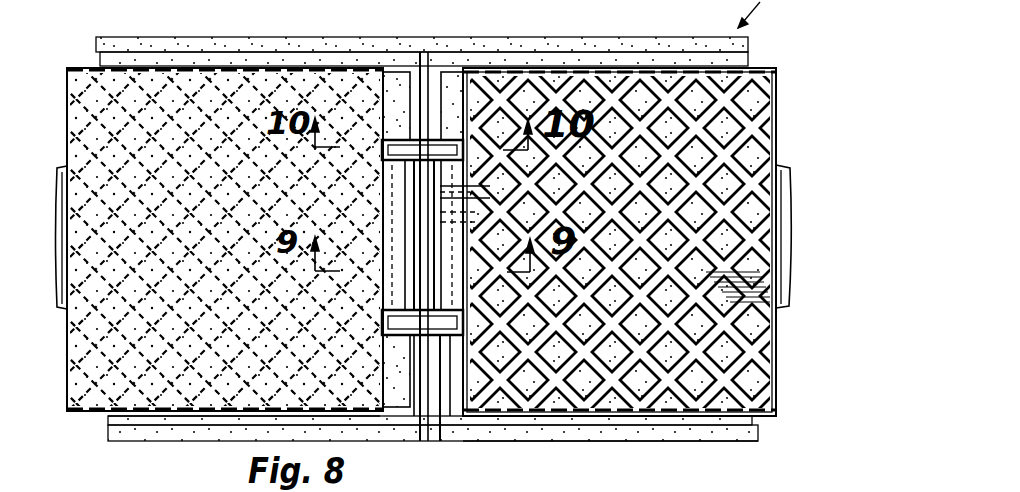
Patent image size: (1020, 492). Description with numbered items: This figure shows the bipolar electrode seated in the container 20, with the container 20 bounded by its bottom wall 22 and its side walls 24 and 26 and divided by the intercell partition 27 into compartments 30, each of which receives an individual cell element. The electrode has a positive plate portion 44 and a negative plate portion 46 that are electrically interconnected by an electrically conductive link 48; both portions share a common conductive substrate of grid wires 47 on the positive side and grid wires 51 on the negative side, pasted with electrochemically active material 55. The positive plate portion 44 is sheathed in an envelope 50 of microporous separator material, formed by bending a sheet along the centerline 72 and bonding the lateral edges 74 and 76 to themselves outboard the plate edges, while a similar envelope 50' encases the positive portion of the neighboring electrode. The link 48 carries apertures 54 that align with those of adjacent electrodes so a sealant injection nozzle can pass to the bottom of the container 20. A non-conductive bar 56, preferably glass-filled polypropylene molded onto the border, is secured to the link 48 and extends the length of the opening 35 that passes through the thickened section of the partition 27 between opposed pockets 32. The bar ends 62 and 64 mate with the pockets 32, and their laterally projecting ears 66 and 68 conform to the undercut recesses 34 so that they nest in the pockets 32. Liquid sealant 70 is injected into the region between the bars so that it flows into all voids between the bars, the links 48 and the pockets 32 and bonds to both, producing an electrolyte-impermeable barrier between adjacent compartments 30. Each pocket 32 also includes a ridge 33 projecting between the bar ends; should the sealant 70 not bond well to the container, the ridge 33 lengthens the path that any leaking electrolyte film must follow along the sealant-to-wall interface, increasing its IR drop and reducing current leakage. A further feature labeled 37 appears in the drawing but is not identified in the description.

The container 20 is at (767, 14).
The bottom wall 22 is at (108, 420).
The side wall 24 is at (560, 46).
The side wall 26 is at (616, 436).
The intercell partition 27 is at (424, 52).
The compartment 30 is at (210, 420).
The pocket 32 is at (402, 138).
The ridge 33 is at (404, 222).
The undercut recess 34 is at (404, 327).
The opening 35 is at (383, 180).
The flange 37 is at (446, 303).
The positive plate portion 44 is at (163, 98).
The negative plate portion 46 is at (688, 56).
The grid wires 47 is at (78, 124).
The link 48 is at (450, 234).
The envelope 50 is at (225, 208).
The envelope 50' is at (619, 208).
The grid wires 51 is at (752, 257).
The apertures 54 is at (412, 246).
The electrochemically active material 55 is at (712, 218).
The bar 56 is at (404, 204).
The bar end 62 is at (446, 138).
The bar end 64 is at (443, 402).
The ear 66 is at (404, 140).
The ear 68 is at (408, 318).
The sealant 70 is at (440, 266).
The centerline 72 is at (67, 334).
The lateral edge 74 is at (86, 66).
The lateral edge 76 is at (70, 418).